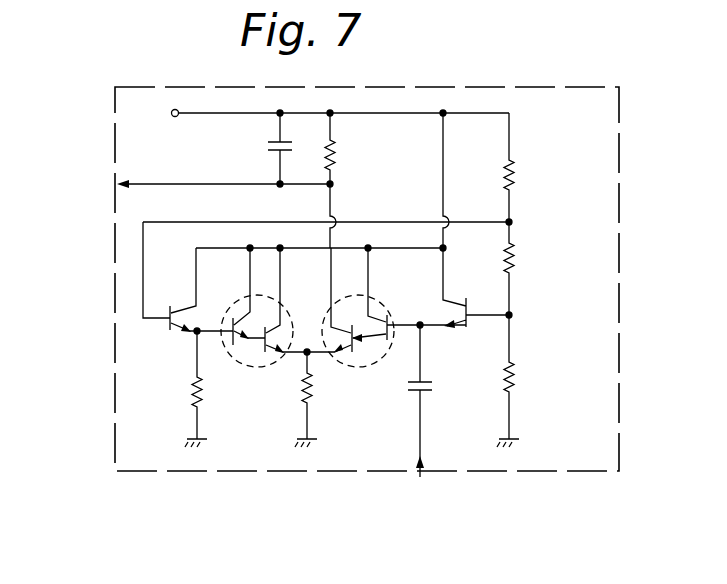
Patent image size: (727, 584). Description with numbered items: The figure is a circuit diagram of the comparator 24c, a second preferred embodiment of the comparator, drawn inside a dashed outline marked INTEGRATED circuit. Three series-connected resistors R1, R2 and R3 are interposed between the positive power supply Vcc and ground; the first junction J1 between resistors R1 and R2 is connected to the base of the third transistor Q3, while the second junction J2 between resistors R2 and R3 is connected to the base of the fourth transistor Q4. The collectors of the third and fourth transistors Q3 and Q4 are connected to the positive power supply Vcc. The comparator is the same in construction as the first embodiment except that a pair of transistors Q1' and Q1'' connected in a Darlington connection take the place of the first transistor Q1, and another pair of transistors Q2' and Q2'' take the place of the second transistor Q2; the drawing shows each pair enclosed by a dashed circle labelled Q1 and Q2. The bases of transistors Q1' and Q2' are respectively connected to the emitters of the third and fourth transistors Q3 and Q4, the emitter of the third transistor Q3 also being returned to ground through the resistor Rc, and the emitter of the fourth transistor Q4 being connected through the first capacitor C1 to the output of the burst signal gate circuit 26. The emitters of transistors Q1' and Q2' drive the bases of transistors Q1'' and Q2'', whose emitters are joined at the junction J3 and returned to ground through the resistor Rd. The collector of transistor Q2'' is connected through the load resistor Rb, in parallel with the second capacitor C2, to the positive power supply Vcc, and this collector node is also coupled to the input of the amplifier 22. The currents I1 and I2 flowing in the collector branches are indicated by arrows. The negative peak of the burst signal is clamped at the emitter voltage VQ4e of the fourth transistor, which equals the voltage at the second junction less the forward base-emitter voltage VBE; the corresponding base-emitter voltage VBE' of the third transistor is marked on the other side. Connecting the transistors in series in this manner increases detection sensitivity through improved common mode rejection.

The comparator 24c is at (457, 88).
The amplifier 22 is at (175, 182).
The burst signal gate circuit 26 is at (420, 489).
The positive power supply Vcc is at (313, 117).
The second capacitor C2 is at (270, 147).
The load resistor Rb is at (337, 157).
The current I2 is at (334, 241).
The first junction J1 is at (513, 223).
The second junction J2 is at (513, 316).
The junction J3 is at (304, 356).
The resistor R1 is at (516, 183).
The resistor R2 is at (516, 266).
The resistor R3 is at (516, 382).
The resistor Rc is at (190, 394).
The resistor Rd is at (314, 384).
The first transistor Q1 is at (278, 339).
The transistor Q1' is at (230, 287).
The transistor Q1'' is at (304, 313).
The second transistor Q2 is at (394, 339).
The transistor Q2' is at (401, 292).
The transistor Q2'' is at (348, 291).
The third transistor Q3 is at (179, 300).
The fourth transistor Q4 is at (458, 297).
The current I1 is at (283, 272).
The first capacitor C1 is at (433, 386).
The forward base-emitter voltage VBE is at (478, 339).
The base-emitter voltage VBE' is at (168, 345).
The emitter voltage of the fourth transistor VQ4e is at (425, 330).
The integrated circuit INTEGRATED is at (508, 472).